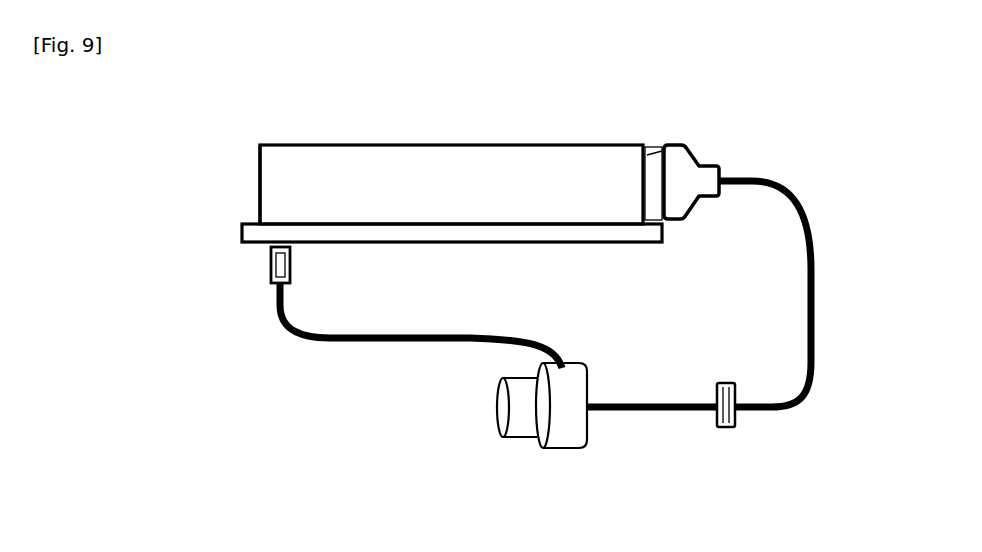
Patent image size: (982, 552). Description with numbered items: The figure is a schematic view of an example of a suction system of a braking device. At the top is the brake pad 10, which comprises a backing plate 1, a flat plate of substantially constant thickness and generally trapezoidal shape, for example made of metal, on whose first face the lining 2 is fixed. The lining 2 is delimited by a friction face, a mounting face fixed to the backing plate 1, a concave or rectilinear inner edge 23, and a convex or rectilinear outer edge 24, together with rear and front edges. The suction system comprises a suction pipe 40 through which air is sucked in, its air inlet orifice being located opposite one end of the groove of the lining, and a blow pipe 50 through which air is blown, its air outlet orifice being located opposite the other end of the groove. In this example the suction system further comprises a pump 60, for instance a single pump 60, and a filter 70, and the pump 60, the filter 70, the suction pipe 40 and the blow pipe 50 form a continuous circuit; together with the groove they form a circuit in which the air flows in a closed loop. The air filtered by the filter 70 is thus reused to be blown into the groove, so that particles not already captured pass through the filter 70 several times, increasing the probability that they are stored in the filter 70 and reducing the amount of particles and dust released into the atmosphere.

The brake pad 10 is at (182, 144).
The lining 2 is at (363, 166).
The backing plate 1 is at (427, 229).
The inner edge 23 is at (259, 210).
The outer edge 24 is at (677, 145).
The suction pipe 40 is at (695, 172).
The blow pipe 50 is at (278, 262).
The pump 60 is at (556, 433).
The filter 70 is at (737, 423).